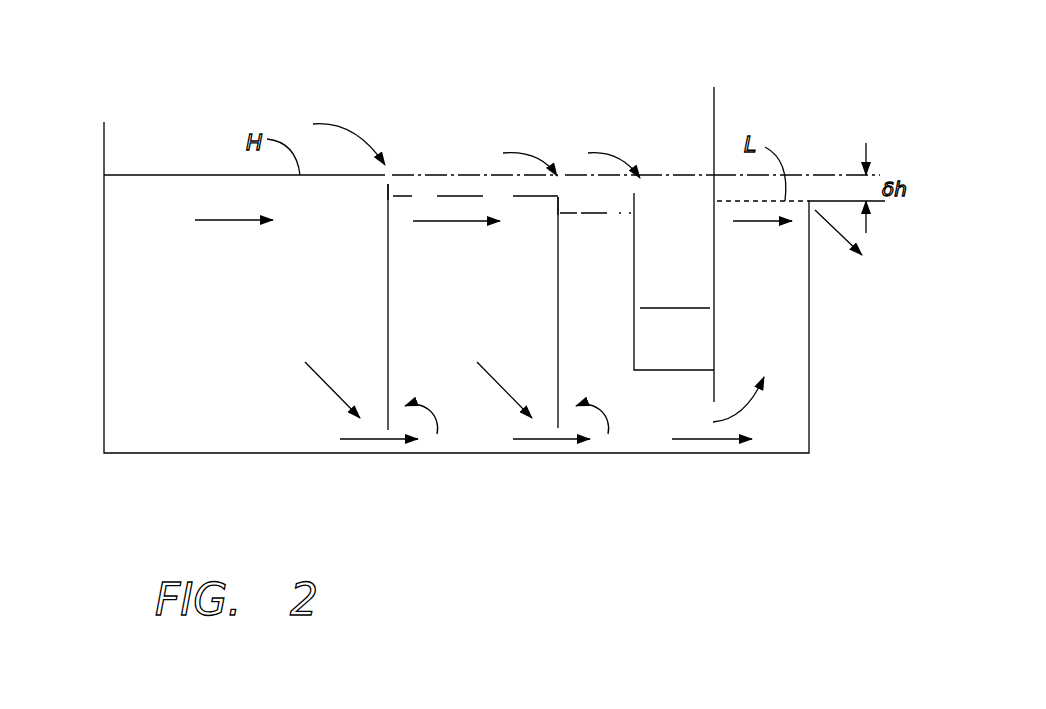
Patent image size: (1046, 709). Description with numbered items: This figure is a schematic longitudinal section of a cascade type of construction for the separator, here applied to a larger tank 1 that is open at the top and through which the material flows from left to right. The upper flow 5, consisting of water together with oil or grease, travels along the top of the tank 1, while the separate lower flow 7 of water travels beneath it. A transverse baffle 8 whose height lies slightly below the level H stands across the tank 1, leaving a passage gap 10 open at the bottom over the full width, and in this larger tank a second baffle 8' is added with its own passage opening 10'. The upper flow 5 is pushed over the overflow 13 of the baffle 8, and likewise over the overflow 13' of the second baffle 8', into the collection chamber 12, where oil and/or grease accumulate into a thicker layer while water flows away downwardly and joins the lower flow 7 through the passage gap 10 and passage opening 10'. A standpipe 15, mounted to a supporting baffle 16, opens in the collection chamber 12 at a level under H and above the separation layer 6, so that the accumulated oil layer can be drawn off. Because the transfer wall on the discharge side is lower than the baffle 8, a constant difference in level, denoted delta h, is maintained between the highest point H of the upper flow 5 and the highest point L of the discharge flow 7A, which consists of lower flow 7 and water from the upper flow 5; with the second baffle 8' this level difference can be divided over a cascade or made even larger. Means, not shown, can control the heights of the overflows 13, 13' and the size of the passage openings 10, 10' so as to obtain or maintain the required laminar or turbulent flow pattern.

The tank 1 is at (222, 322).
The upper flow 5 is at (683, 349).
The separation layer 6 is at (411, 197).
The lower flow 7 is at (132, 262).
The discharge flow 7A is at (856, 244).
The baffle 8 is at (364, 307).
The second baffle 8' is at (525, 312).
The passage gap 10 is at (403, 445).
The passage opening 10' is at (574, 445).
The collection chamber 12 is at (605, 343).
The overflow 13 is at (347, 199).
The overflow unit 13' is at (519, 227).
The standpipe 15 is at (636, 256).
The supporting baffle 16 is at (713, 113).